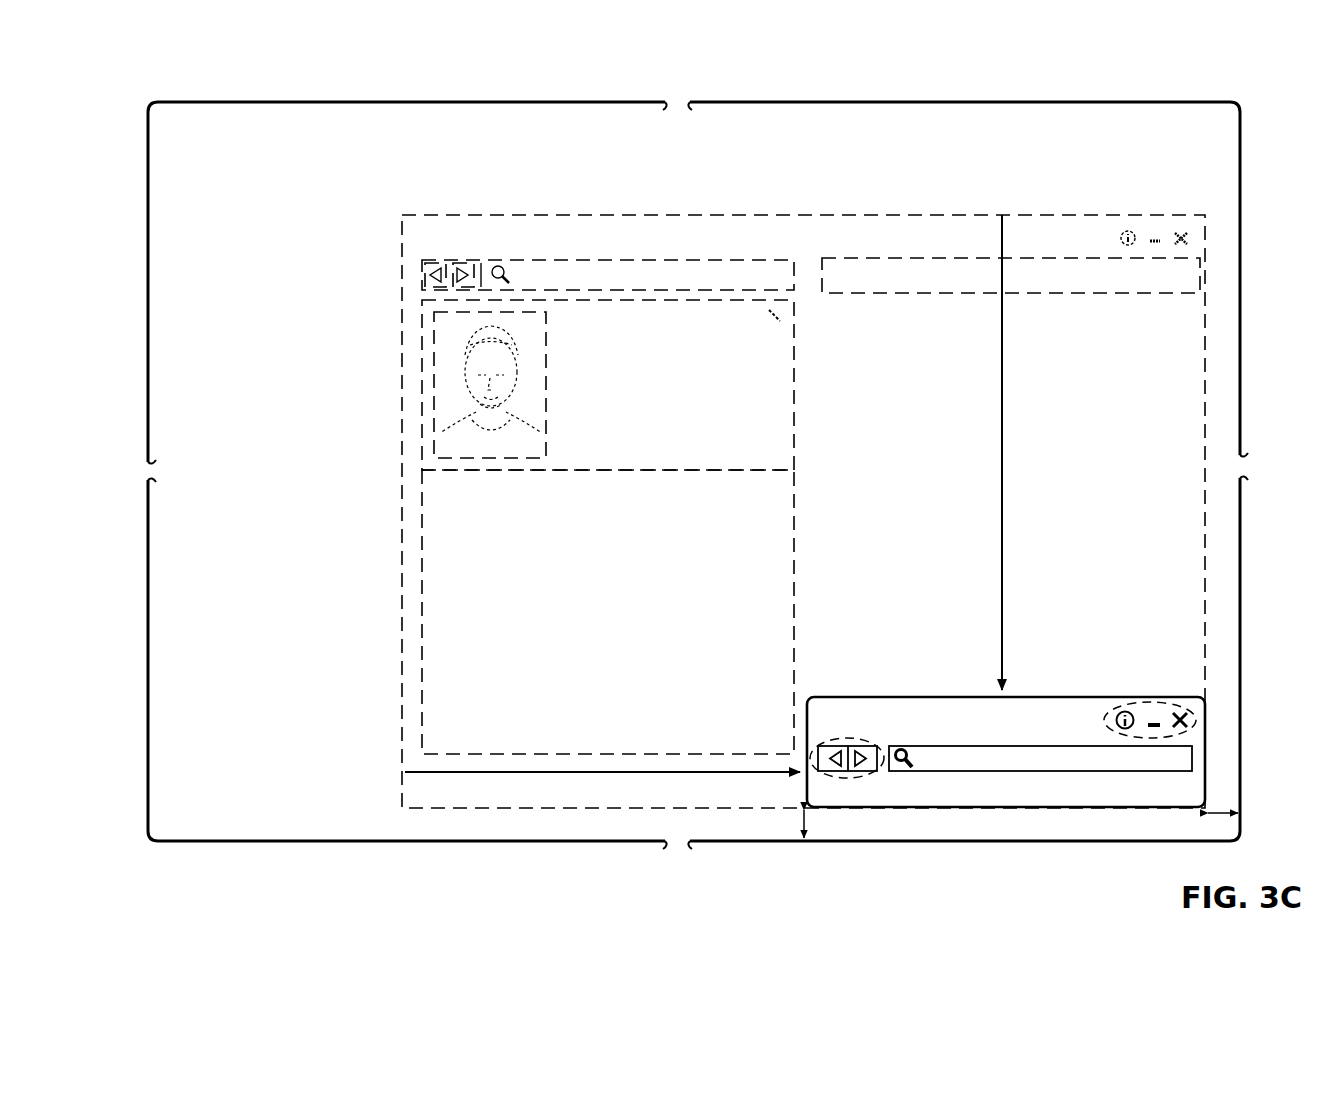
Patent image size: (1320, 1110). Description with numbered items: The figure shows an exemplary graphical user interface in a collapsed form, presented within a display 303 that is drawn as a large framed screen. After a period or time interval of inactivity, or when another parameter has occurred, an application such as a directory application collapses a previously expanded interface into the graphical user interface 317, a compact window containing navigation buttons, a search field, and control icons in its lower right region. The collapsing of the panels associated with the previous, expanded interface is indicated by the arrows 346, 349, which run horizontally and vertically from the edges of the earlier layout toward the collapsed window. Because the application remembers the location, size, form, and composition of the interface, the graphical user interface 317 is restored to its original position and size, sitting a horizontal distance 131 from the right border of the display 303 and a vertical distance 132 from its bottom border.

The display screen 303 is at (176, 74).
The graphical user interface 317 is at (930, 682).
The arrow 349 is at (1004, 486).
The arrow 346 is at (611, 774).
The vertical distance 132 is at (803, 826).
The horizontal distance 131 is at (1226, 814).